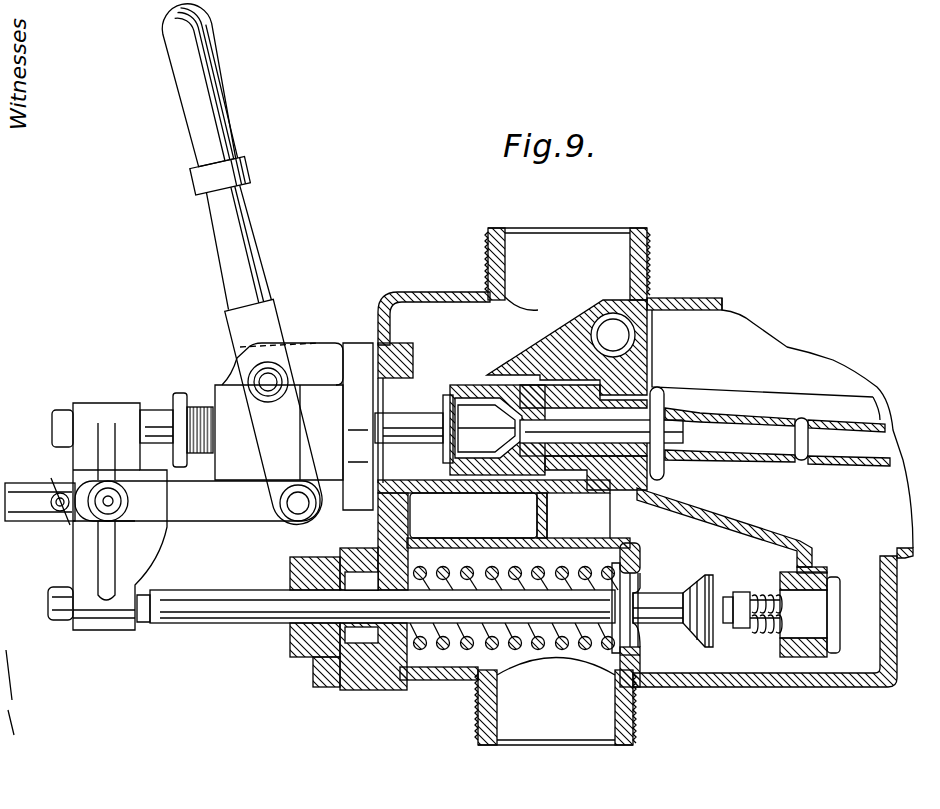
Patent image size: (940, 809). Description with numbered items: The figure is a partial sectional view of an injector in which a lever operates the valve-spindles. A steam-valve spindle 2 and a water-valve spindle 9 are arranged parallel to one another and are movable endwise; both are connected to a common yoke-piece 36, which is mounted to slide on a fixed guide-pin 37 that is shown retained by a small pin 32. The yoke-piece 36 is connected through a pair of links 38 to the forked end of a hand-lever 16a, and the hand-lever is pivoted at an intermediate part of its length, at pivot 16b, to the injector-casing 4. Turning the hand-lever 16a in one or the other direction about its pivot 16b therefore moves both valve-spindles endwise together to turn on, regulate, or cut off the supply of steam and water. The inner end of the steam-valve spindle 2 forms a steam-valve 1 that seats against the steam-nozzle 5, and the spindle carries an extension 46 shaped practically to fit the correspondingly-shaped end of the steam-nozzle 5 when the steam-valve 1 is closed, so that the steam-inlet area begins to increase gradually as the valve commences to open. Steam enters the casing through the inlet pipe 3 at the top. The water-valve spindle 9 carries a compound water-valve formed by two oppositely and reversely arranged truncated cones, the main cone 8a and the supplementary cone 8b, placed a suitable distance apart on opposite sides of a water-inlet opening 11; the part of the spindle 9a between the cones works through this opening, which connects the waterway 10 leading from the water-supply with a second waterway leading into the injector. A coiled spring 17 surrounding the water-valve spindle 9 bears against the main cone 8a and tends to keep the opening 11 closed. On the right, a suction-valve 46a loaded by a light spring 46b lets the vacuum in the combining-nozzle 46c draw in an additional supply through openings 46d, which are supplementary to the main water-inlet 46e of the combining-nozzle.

The steam-valve 1 is at (462, 388).
The steam-valve spindle 2 is at (410, 410).
The inlet pipe 3 is at (567, 269).
The injector-casing 4 is at (294, 426).
The steam-nozzle 5 is at (601, 432).
The main cone 8a is at (653, 566).
The supplementary cone 8b is at (700, 590).
The water-valve spindle 9 is at (385, 608).
The spindle part between cones 9a is at (655, 598).
The waterway 10 is at (555, 702).
The water-inlet opening 11 is at (638, 637).
The hand-lever 16a is at (228, 76).
The pivot 16b is at (284, 378).
The coiled spring 17 is at (492, 566).
The pin 32 is at (54, 484).
The yoke-piece 36 is at (133, 555).
The fixed guide-pin 37 is at (33, 518).
The links 38 is at (197, 501).
The extension 46 is at (488, 428).
The suction-valve 46a is at (833, 585).
The light spring 46b is at (757, 640).
The combining-nozzle 46c is at (848, 445).
The openings 46d is at (800, 420).
The main water-inlet 46e is at (662, 396).